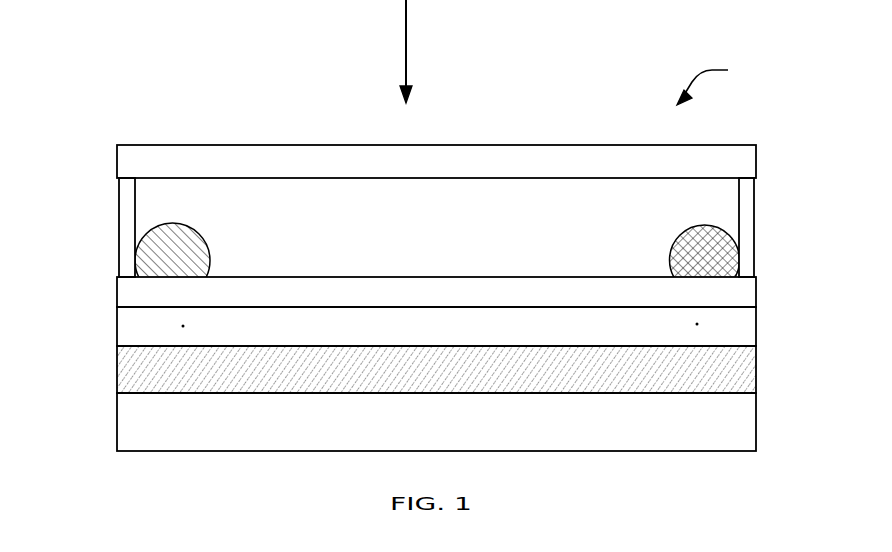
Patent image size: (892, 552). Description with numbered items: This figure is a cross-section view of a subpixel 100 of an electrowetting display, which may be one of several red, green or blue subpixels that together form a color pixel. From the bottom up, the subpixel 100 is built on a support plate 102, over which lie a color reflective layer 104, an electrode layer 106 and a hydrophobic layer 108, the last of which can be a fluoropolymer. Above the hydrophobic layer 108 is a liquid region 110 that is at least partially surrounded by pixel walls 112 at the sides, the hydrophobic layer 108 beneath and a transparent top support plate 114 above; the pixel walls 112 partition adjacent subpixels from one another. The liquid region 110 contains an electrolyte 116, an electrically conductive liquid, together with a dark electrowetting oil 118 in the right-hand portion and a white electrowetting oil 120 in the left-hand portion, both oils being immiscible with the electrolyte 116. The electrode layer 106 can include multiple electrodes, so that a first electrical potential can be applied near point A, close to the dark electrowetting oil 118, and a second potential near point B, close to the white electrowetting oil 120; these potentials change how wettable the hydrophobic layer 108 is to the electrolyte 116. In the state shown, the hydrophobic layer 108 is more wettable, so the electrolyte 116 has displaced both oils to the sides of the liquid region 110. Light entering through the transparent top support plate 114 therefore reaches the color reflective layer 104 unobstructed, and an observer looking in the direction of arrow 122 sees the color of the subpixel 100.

The subpixel 100 is at (721, 84).
The support plate 102 is at (117, 422).
The color reflective layer 104 is at (117, 373).
The electrode layer 106 is at (117, 317).
The hydrophobic layer 108 is at (117, 296).
The liquid region 110 is at (458, 232).
The pixel walls 112 is at (118, 193).
The transparent top support plate 114 is at (458, 172).
The electrolyte 116 is at (535, 262).
The dark electrowetting oil 118 is at (683, 237).
The white electrowetting oil 120 is at (200, 240).
The arrow 122 is at (406, 12).